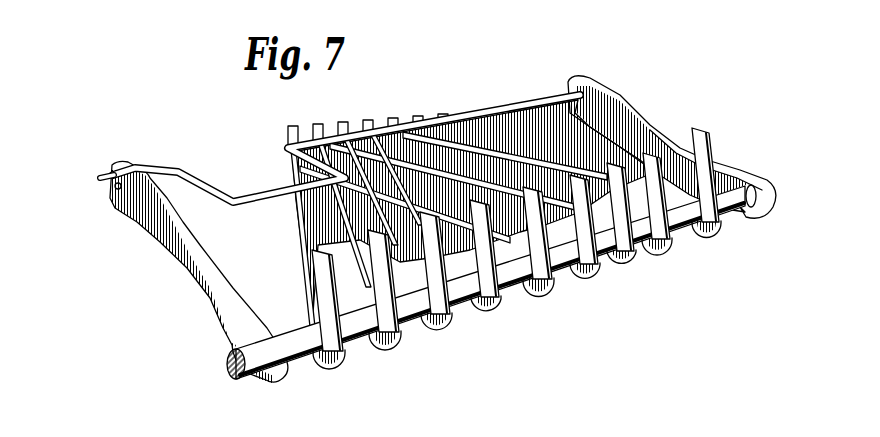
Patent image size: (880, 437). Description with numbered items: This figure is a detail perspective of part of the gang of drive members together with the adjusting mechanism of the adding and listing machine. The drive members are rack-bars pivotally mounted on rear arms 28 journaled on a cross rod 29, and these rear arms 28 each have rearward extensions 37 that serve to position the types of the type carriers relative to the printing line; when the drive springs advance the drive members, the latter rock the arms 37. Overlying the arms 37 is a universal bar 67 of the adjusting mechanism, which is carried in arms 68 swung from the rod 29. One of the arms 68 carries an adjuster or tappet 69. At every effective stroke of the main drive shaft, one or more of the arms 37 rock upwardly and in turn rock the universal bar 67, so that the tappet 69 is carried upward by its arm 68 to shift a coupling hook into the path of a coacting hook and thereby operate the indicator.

The rear arms 28 is at (375, 250).
The cross rod 29 is at (307, 340).
The rearward extensions 37 is at (522, 160).
The universal bar 67 is at (491, 111).
The arms 68 is at (200, 283).
The adjuster or tappet 69 is at (99, 177).